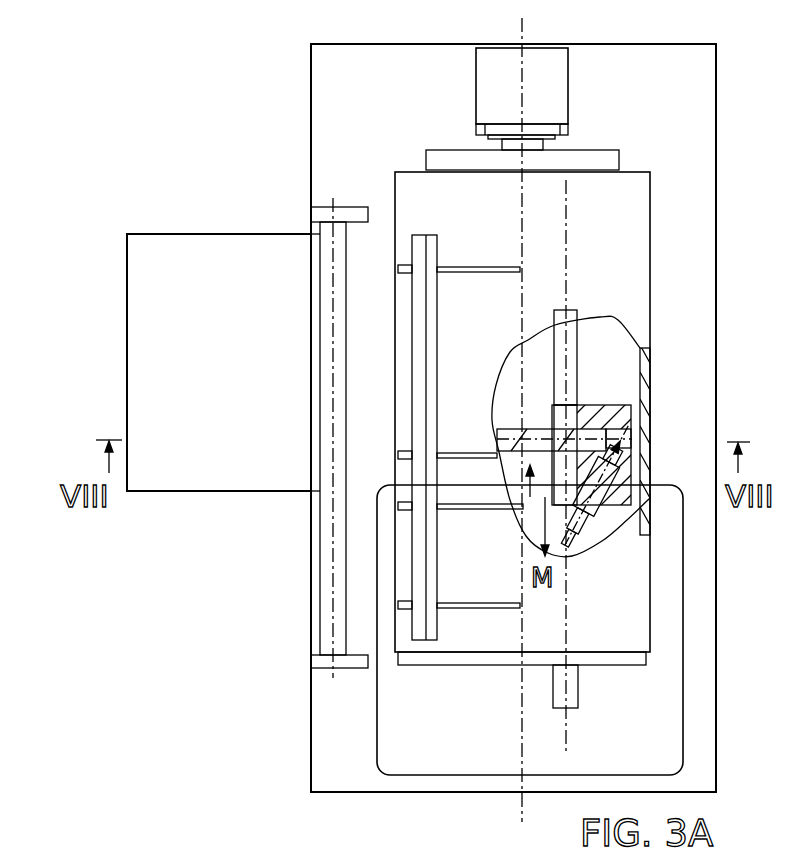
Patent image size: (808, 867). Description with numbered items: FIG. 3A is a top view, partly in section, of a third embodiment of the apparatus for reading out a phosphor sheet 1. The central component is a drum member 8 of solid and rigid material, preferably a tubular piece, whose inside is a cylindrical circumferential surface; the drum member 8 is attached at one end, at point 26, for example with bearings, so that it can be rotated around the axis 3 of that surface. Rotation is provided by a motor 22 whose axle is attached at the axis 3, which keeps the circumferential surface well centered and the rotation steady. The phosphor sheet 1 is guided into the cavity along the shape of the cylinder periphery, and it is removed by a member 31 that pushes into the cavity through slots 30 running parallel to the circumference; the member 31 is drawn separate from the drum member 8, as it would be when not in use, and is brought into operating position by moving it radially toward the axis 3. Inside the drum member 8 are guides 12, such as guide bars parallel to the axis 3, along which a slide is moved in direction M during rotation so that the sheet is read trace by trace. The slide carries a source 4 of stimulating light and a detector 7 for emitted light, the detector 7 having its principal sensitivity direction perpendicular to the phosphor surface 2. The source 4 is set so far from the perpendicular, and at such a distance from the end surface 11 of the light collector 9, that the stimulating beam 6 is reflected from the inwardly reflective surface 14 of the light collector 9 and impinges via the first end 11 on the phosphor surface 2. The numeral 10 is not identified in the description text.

The phosphor sheet 1 is at (223, 377).
The phosphor surface 2 is at (630, 364).
The axis 3 is at (521, 745).
The source of stimulating light 4 is at (593, 508).
The stimulating light beam 6 is at (622, 458).
The detector for emitted light 7 is at (542, 431).
The drum member 8 is at (494, 577).
The light collector 9 is at (610, 420).
The cylinder 10 is at (625, 477).
The end surface of the light collector 11 is at (632, 436).
The guides 12 is at (572, 687).
The inwardly reflective surface 14 is at (610, 412).
The motor 22 is at (514, 97).
The bearing attachment point 26 is at (558, 147).
The slots 30 is at (474, 266).
The pushing member 31 is at (427, 561).